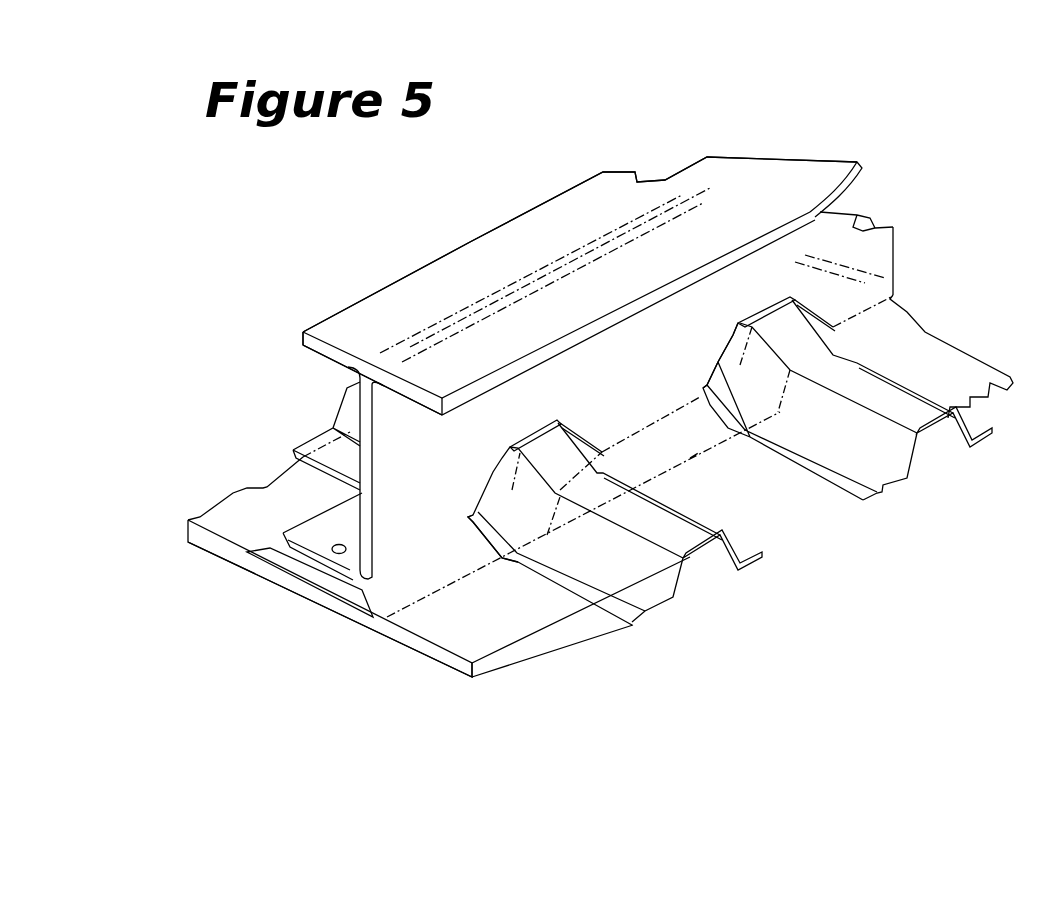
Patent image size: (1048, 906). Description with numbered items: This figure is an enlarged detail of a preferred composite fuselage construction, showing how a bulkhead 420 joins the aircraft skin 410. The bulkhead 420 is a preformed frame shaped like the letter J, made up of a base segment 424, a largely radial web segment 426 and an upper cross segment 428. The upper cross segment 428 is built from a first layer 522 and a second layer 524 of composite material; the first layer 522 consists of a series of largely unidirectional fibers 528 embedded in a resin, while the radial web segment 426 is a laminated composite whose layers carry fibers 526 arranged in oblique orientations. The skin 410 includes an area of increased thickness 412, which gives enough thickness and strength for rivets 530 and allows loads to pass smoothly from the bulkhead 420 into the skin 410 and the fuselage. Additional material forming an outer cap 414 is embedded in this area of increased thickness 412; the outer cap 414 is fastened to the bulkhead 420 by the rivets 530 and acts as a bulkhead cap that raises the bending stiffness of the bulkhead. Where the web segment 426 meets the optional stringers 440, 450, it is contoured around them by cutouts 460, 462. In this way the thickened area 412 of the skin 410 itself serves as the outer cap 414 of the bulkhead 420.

The aircraft skin 410 is at (217, 557).
The area of increased thickness 412 is at (205, 512).
The outer cap 414 is at (302, 578).
The bulkhead 420 is at (349, 370).
The base segment 424 is at (280, 540).
The radial web segment 426 is at (372, 552).
The upper cross segment 428 is at (301, 333).
The stringer 440 is at (700, 558).
The stringer 450 is at (926, 438).
The cutout 460 is at (505, 552).
The cutout 462 is at (712, 360).
The first layer 522 is at (858, 164).
The second layer 524 is at (866, 186).
The fibers 526 is at (858, 263).
The unidirectional fibers 528 is at (689, 194).
The rivets 530 is at (345, 556).